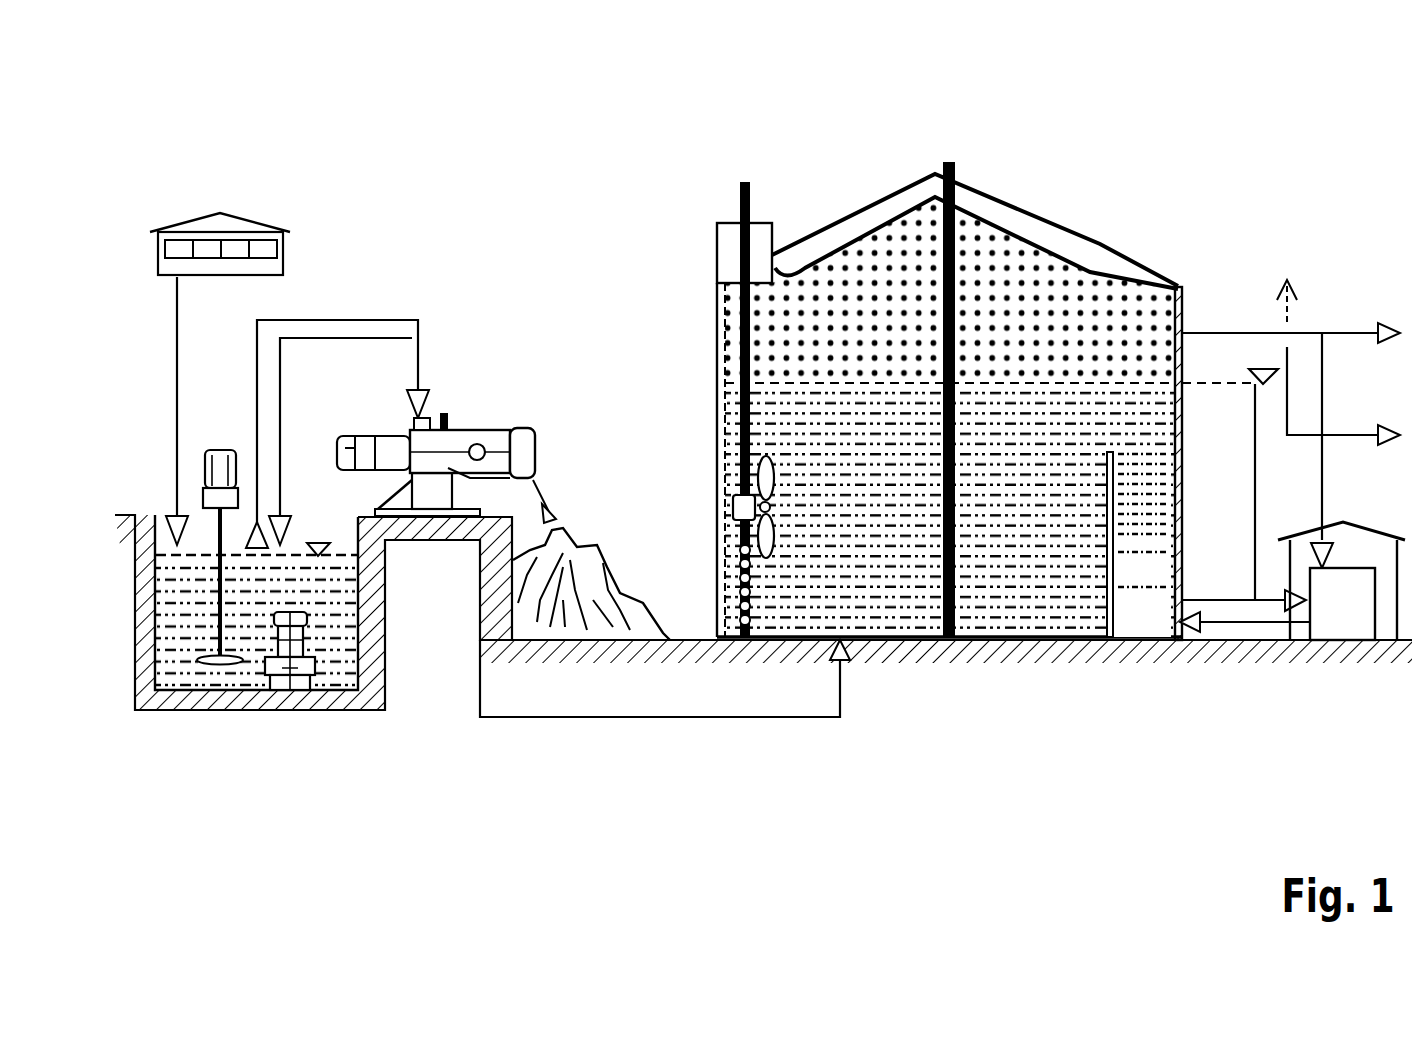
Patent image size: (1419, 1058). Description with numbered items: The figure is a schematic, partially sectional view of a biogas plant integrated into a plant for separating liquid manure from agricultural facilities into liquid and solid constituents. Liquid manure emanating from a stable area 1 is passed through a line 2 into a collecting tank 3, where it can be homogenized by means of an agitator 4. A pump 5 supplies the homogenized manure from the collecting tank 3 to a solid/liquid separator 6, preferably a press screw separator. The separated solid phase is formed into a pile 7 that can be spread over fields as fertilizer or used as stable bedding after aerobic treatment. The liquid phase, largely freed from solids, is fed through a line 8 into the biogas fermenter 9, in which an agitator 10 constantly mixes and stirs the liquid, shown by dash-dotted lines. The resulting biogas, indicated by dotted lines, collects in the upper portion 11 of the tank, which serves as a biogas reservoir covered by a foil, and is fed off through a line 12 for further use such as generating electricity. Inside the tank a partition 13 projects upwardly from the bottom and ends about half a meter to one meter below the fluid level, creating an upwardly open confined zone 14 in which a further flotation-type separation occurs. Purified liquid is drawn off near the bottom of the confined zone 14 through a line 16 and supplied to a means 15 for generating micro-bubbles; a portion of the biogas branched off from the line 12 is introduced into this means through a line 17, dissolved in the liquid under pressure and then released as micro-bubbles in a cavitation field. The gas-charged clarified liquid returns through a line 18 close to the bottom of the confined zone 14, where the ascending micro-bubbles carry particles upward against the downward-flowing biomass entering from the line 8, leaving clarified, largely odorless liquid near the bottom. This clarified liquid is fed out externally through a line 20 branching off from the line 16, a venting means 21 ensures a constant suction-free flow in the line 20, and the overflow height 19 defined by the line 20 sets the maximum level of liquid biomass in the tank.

The stable area 1 is at (272, 267).
The line 2 is at (177, 300).
The collecting tank 3 is at (335, 594).
The agitator 4 is at (225, 452).
The pump 5 is at (303, 704).
The solid/liquid separator 6 is at (468, 430).
The pile 7 is at (590, 567).
The line 8 is at (617, 717).
The biogas fermenter 9 is at (825, 450).
The agitator 10 is at (733, 490).
The upper portion 11 is at (870, 313).
The line 12 is at (1378, 328).
The partition 13 is at (1106, 530).
The confined zone 14 is at (1130, 598).
The means for generating micro-bubbles 15 is at (1340, 610).
The line 16 is at (1197, 598).
The line 17 is at (1325, 505).
The line 18 is at (1243, 625).
The overflow height 19 is at (1253, 372).
The line 20 is at (1378, 430).
The venting means 21 is at (1282, 288).